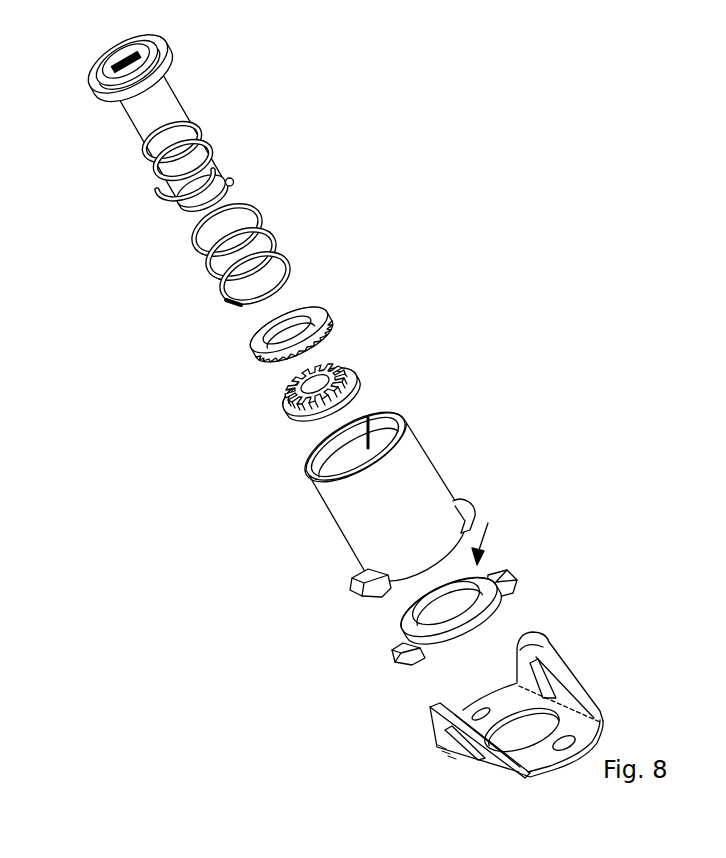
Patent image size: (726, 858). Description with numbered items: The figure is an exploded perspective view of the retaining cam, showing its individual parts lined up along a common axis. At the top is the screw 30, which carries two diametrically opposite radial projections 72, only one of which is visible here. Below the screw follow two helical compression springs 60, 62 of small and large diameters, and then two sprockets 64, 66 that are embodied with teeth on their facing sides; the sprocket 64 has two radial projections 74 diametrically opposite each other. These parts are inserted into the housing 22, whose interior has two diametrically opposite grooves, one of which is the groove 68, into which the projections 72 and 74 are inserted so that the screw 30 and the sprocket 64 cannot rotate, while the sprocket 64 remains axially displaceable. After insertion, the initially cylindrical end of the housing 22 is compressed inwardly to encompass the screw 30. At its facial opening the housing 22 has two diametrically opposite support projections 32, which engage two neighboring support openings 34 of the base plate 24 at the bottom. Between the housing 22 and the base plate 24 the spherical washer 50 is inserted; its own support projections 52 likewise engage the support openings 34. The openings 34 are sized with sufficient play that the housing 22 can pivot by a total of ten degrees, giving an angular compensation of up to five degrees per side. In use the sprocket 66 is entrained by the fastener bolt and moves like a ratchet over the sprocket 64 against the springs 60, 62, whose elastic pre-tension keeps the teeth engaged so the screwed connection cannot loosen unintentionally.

The housing 22 is at (378, 499).
The base plate 24 is at (483, 713).
The screw 30 is at (133, 117).
The support projections 32 is at (462, 520).
The support openings 34 is at (552, 682).
The spherical washer 50 is at (489, 532).
The support projections 52 is at (507, 573).
The helical compression spring 60 is at (180, 205).
The helical compression spring 62 is at (232, 312).
The sprocket 64 is at (283, 330).
The sprocket 66 is at (295, 413).
The groove 68 is at (368, 416).
The radial projection 72 is at (98, 82).
The radial projection 74 is at (293, 312).